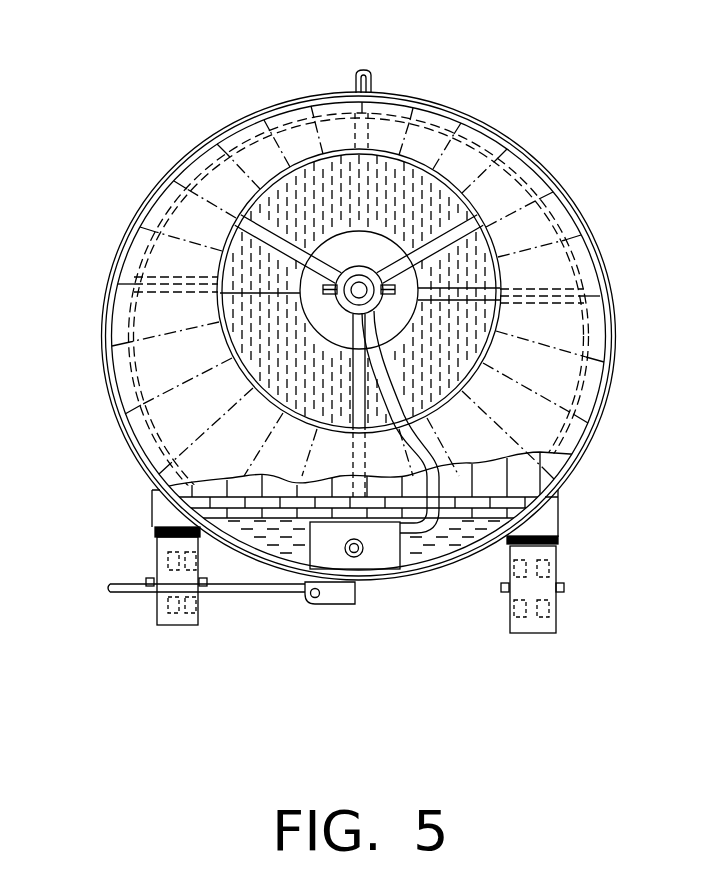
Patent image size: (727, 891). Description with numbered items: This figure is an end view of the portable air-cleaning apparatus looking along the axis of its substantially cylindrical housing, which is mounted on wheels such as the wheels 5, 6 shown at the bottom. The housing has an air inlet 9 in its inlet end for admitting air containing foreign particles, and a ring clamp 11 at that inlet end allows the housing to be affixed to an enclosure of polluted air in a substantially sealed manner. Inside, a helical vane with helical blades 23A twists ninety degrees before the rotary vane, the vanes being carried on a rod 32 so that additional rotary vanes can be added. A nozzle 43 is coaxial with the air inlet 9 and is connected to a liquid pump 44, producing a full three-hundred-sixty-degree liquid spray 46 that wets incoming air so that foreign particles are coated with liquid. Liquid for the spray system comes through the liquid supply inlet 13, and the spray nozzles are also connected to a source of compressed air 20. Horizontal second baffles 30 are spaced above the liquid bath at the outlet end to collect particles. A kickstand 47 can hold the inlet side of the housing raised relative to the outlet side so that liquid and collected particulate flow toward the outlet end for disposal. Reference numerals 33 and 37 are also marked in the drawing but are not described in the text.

The wheel 5 is at (178, 617).
The wheel 6 is at (530, 623).
The air inlet 9 is at (462, 192).
The ring clamp 11 is at (366, 72).
The liquid supply inlet 13 is at (358, 557).
The source of compressed air 20 is at (433, 463).
The helical blade 23A is at (553, 286).
The second baffles 30 is at (523, 505).
The rod 32 is at (328, 282).
The hub 33 is at (340, 297).
The vanes 37 is at (498, 254).
The nozzle 43 is at (323, 232).
The liquid pump 44 is at (388, 555).
The liquid spray 46 is at (393, 188).
The kickstand 47 is at (255, 597).